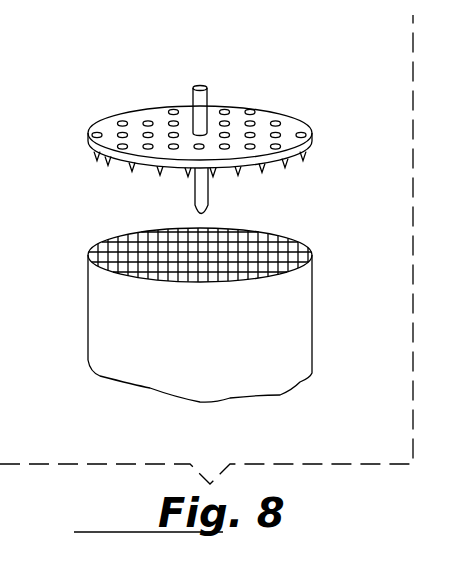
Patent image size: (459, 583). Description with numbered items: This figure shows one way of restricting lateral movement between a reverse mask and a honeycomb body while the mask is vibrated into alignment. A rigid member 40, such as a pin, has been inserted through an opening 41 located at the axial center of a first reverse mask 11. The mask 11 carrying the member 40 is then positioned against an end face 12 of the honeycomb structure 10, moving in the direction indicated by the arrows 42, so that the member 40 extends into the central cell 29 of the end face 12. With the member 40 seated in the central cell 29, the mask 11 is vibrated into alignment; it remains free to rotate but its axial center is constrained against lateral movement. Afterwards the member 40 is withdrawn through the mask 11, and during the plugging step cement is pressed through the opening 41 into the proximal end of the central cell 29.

The honeycomb structure 10 is at (315, 302).
The first reverse mask 11 is at (317, 138).
The end face 12 is at (135, 251).
The central cell 29 is at (200, 250).
The member 40 is at (208, 204).
The opening 41 is at (210, 135).
The arrows 42 is at (89, 123).